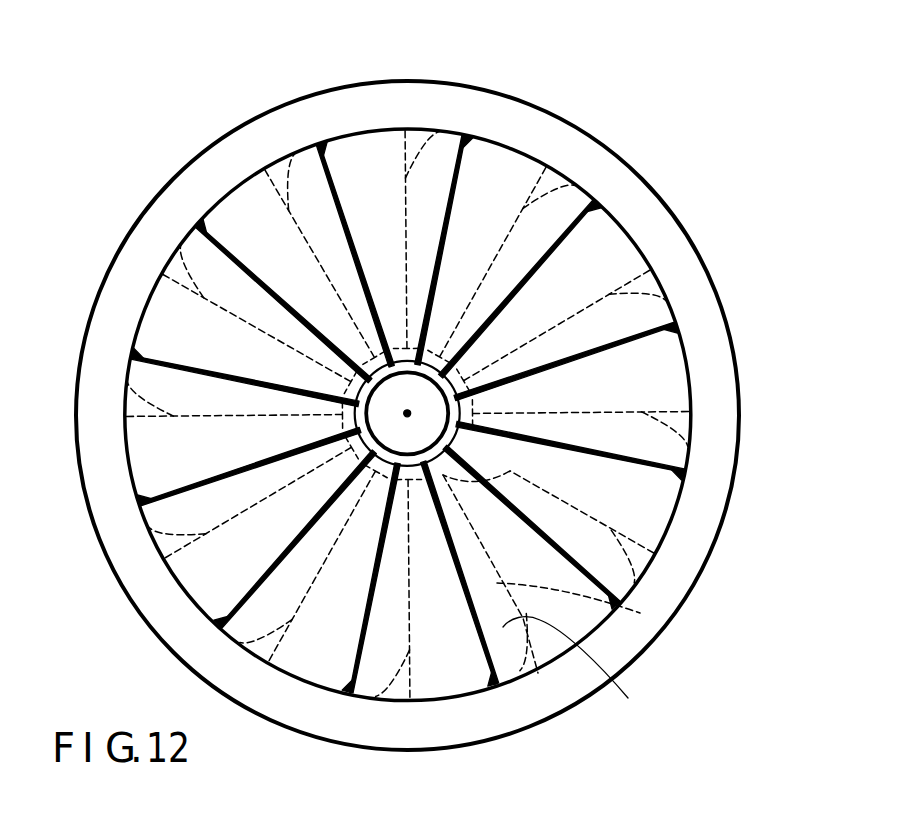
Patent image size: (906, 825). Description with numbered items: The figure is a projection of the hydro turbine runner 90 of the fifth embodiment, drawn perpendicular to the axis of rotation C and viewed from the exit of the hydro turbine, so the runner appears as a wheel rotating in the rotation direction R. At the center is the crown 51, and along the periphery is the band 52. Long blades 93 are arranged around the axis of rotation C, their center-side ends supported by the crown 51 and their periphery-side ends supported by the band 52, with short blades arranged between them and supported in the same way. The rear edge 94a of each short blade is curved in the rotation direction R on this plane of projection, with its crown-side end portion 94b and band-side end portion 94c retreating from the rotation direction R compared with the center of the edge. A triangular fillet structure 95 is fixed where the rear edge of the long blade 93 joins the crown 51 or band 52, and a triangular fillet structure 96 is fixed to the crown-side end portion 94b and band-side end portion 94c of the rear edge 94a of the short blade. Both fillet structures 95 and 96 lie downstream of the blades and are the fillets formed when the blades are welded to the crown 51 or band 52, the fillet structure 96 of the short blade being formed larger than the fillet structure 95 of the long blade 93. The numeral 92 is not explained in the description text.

The hydro turbine runner 90 is at (637, 172).
The band 52 is at (670, 227).
The crown 51 is at (392, 387).
The axis of rotation C is at (408, 412).
The rotation direction R is at (313, 70).
The blade 92 is at (643, 653).
The long blade 93 is at (577, 671).
The rear edge of the short blade 94a is at (577, 613).
The crown-side end portion 94b is at (510, 471).
The band-side end portion 94c is at (555, 645).
The fillet structure 95 is at (498, 688).
The fillet structure 96 is at (538, 673).